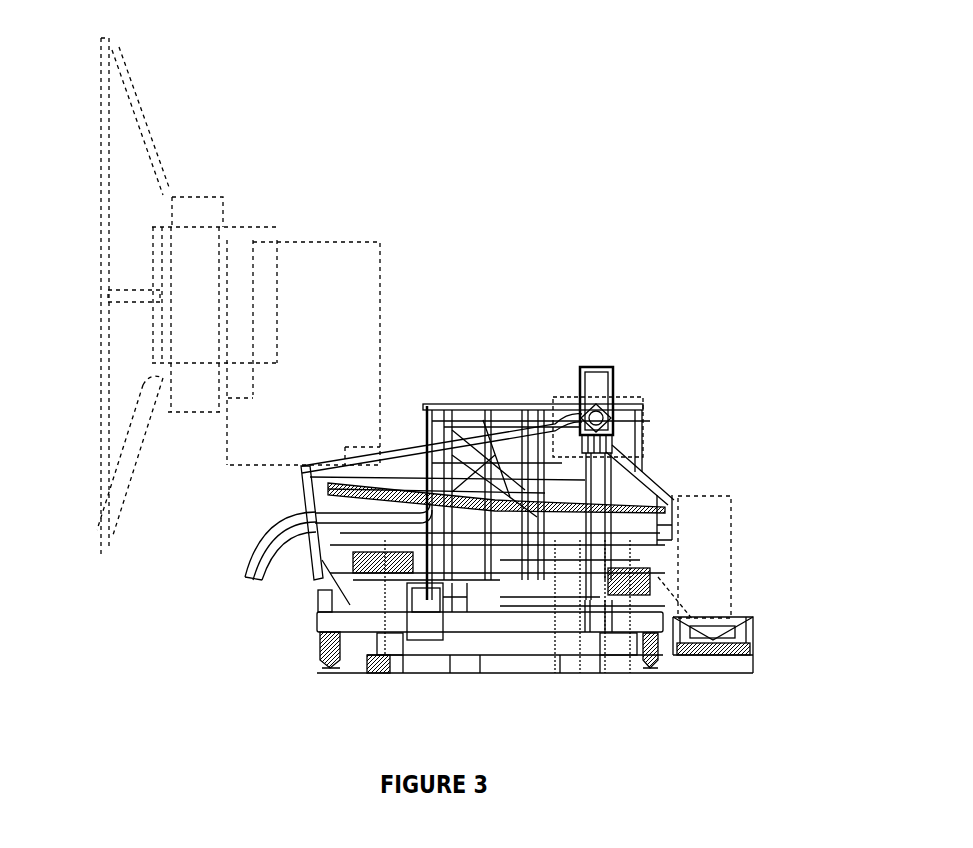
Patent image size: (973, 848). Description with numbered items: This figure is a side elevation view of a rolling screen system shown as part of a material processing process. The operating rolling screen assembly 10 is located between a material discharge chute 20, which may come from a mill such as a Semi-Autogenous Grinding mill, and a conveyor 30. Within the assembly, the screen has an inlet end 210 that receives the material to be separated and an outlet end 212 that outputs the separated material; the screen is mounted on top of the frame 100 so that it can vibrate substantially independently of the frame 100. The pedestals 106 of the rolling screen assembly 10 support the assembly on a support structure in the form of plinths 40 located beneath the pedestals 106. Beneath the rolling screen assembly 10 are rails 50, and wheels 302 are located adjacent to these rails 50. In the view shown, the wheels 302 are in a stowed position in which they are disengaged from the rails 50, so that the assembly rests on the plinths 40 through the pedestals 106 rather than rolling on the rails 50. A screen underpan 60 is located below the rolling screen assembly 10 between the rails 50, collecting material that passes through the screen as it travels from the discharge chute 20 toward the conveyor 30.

The rolling screen assembly 10 is at (438, 432).
The material discharge chute 20 is at (317, 122).
The conveyor 30 is at (846, 557).
The plinths 40 is at (397, 664).
The rails 50 is at (327, 677).
The screen underpan 60 is at (515, 657).
The frame 100 is at (317, 618).
The pedestals 106 is at (375, 668).
The inlet end 210 is at (400, 413).
The outlet end 212 is at (704, 490).
The wheels 302 is at (323, 653).